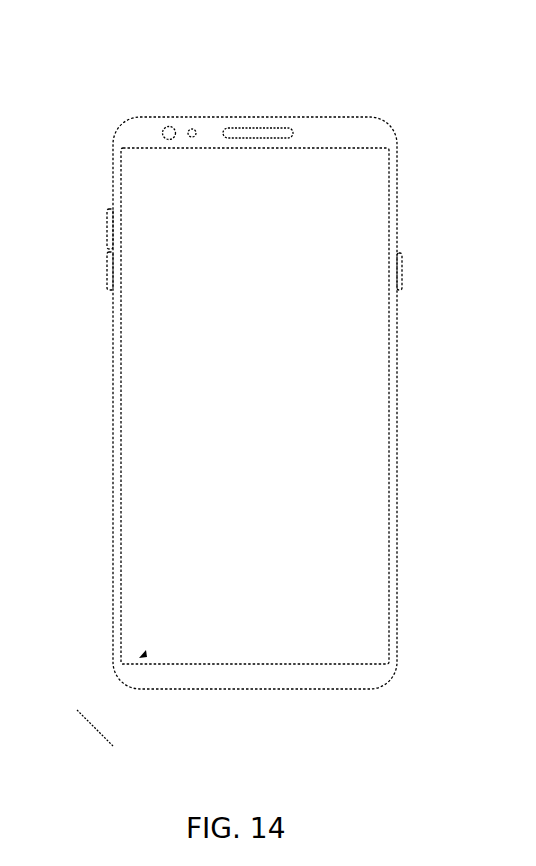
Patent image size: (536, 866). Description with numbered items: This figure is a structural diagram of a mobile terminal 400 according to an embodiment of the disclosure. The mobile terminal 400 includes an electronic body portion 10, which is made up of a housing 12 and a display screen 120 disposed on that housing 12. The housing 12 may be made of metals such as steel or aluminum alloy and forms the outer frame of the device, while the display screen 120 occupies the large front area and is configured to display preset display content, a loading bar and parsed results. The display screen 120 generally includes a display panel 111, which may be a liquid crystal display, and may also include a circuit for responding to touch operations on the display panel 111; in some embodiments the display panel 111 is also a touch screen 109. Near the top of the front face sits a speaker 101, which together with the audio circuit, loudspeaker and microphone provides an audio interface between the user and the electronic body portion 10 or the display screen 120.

The mobile terminal 400 is at (303, 71).
The speaker 101 is at (272, 127).
The touch screen 109 is at (215, 406).
The display panel 111 is at (137, 402).
The display screen 120 is at (140, 658).
The housing 12 is at (165, 670).
The electronic body portion 10 is at (94, 729).